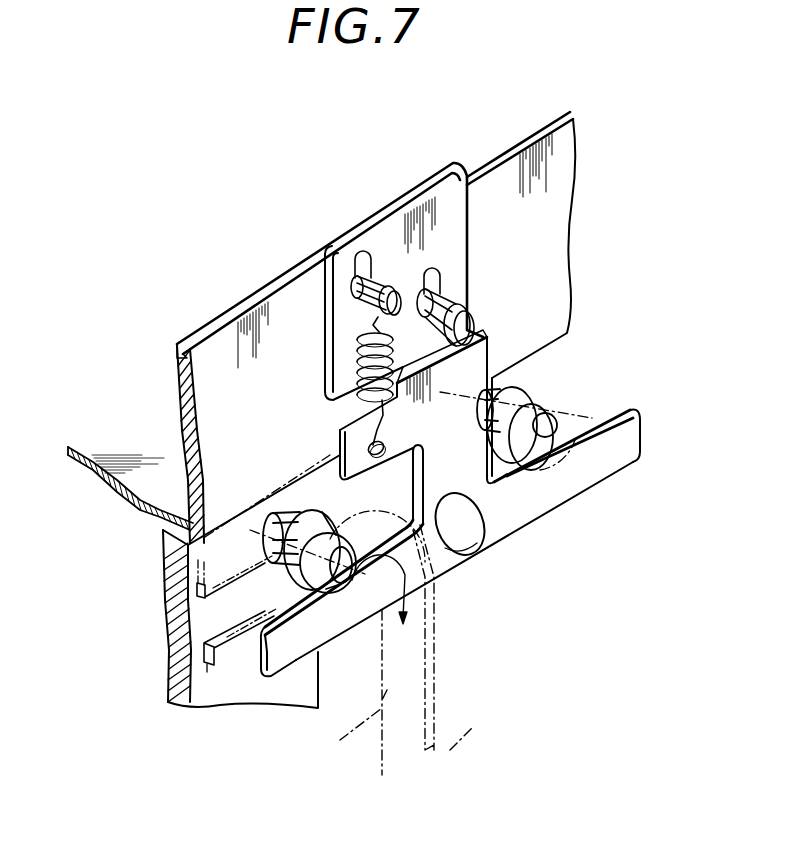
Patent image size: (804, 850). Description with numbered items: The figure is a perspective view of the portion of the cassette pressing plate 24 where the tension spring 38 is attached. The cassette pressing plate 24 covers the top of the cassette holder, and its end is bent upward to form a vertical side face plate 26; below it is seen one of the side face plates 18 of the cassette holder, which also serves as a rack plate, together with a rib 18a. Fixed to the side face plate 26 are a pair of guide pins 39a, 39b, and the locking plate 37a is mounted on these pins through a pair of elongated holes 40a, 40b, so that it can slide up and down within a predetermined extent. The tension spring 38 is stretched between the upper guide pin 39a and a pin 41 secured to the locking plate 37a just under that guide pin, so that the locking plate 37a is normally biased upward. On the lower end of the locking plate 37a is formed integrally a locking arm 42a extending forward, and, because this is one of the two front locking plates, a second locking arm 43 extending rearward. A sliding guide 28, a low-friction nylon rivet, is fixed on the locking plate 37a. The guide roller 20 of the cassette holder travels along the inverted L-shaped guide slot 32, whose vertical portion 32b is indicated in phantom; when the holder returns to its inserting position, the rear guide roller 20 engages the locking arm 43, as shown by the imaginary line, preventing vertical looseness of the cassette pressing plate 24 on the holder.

The side face plate 18 is at (220, 693).
The rib 18a is at (174, 566).
The guide roller 20 is at (540, 438).
The cassette pressing plate 24 is at (90, 423).
The side face plate 26 is at (222, 352).
The sliding guide 28 is at (478, 535).
The guide slot 32 is at (535, 483).
The vertical portion 32b is at (363, 713).
The locking plate 37a is at (490, 360).
The tension spring 38 is at (330, 357).
The guide pin 39a is at (357, 273).
The guide pin 39b is at (450, 310).
The elongated hole 40a is at (381, 265).
The elongated hole 40b is at (445, 283).
The pin 41 is at (373, 447).
The locking arm 42a is at (281, 657).
The locking arm 43 is at (627, 454).